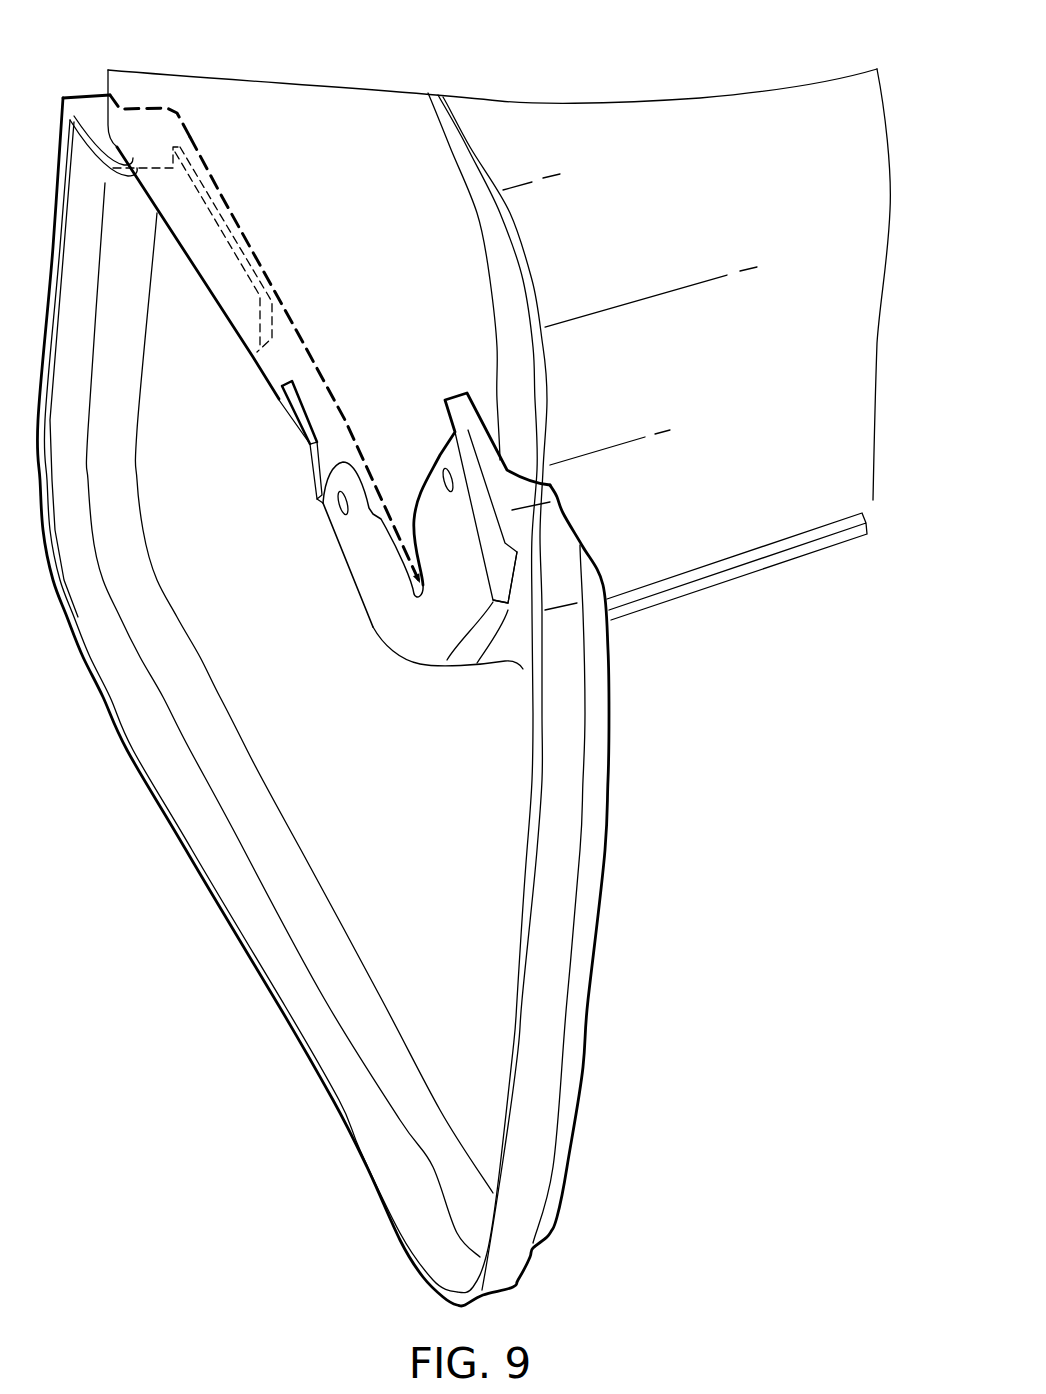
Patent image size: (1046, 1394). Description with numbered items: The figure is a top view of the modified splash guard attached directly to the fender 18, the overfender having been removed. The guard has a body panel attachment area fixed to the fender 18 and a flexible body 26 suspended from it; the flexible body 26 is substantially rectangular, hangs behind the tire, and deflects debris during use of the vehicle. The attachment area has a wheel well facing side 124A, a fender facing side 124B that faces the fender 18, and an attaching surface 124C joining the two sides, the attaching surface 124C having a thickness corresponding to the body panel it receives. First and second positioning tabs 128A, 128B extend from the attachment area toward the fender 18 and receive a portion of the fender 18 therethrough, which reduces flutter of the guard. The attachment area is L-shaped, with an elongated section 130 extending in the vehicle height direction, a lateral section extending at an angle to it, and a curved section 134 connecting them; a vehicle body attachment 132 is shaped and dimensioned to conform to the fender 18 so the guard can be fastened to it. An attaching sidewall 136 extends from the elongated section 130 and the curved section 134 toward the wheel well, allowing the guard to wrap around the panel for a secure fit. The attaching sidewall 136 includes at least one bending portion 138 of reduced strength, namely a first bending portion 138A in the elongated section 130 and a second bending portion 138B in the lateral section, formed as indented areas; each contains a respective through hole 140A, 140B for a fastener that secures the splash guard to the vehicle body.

The fender 18 is at (324, 72).
The flexible body 26 is at (150, 797).
The wheel well facing side 124A is at (288, 455).
The fender facing side 124B is at (300, 337).
The attaching surface 124C is at (148, 130).
The first positioning tab 128A is at (305, 400).
The second positioning tab 128B is at (238, 223).
The elongated section 130 is at (444, 570).
The vehicle body attachment 132 is at (765, 562).
The curved section 134 is at (491, 681).
The attaching sidewall 136 is at (417, 660).
The bending portion 138 is at (507, 572).
The first bending portion 138A is at (326, 544).
The second bending portion 138B is at (450, 517).
The through hole 140A is at (338, 504).
The through hole 140B is at (442, 480).